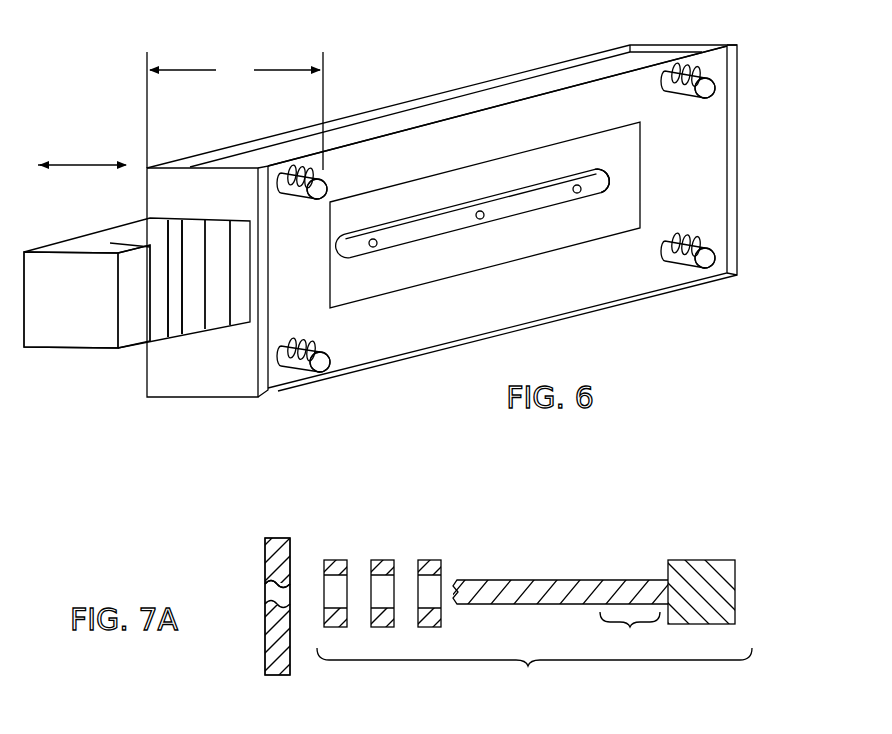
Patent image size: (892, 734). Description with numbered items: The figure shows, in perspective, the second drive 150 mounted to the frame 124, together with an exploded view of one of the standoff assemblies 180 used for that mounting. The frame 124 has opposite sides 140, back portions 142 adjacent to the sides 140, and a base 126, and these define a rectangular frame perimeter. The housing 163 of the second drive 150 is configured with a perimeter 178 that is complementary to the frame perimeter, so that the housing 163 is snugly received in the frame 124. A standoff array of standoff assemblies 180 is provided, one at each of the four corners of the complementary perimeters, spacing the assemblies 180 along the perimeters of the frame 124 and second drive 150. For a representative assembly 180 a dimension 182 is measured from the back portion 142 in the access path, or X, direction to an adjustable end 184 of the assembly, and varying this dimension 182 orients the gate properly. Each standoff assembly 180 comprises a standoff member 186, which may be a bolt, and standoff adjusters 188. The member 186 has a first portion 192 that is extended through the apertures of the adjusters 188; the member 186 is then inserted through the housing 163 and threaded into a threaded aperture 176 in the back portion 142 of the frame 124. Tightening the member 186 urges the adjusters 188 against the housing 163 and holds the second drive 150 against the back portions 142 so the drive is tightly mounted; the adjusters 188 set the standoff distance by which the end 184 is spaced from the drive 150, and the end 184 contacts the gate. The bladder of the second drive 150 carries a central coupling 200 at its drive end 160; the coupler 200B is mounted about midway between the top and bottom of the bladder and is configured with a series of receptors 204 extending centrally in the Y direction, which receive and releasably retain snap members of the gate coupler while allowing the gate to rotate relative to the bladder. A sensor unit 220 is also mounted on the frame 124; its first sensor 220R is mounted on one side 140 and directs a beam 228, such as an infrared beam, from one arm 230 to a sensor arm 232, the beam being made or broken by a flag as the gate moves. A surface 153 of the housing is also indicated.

In FIG. 6, the frame 124 is at (742, 45).
In FIG. 7A, the frame 124 is at (295, 668).
In FIG. 6, the base 126 is at (706, 282).
In FIG. 6, the side 140 is at (265, 370).
In FIG. 6, the back portion 142 is at (237, 150).
In FIG. 7A, the back portion 142 is at (272, 697).
In FIG. 6, the second drive 150 is at (367, 116).
In FIG. 6, the front surface 153 is at (718, 125).
In FIG. 6, the drive end 160 is at (603, 180).
In FIG. 6, the housing 163 is at (430, 322).
In FIG. 7A, the aperture 176 is at (270, 590).
In FIG. 6, the perimeter 178 is at (472, 110).
In FIG. 6, the standoff assembly 180 is at (297, 167).
In FIG. 7A, the standoff assembly 180 is at (556, 620).
In FIG. 6, the dimension 182 is at (235, 111).
In FIG. 6, the adjustable end 184 is at (328, 187).
In FIG. 7A, the adjustable end 184 is at (738, 592).
In FIG. 7A, the standoff member 186 is at (567, 593).
In FIG. 7A, the standoff adjuster 188 is at (336, 563).
In FIG. 7A, the first portion 192 is at (630, 634).
In FIG. 6, the central coupling 200 is at (403, 256).
In FIG. 6, the coupler 200B is at (587, 195).
In FIG. 6, the receptor 204 is at (375, 239).
In FIG. 6, the sensor unit 220 is at (117, 223).
In FIG. 6, the first sensor 220R is at (78, 334).
In FIG. 6, the beam 228 is at (165, 313).
In FIG. 6, the arm 230 is at (177, 232).
In FIG. 6, the sensor arm 232 is at (135, 340).
In FIG. 6, the X direction X is at (82, 165).